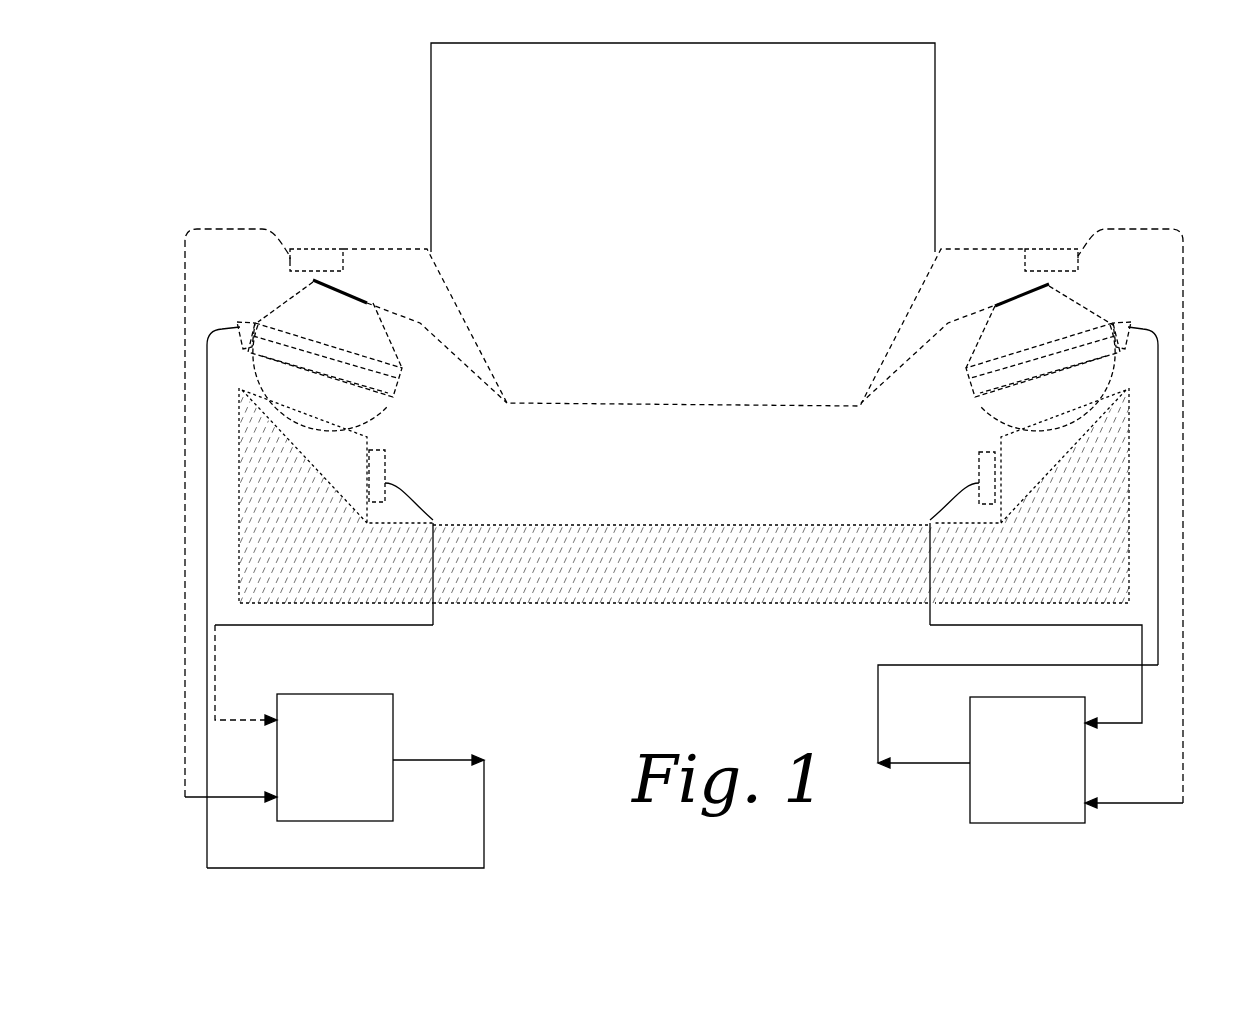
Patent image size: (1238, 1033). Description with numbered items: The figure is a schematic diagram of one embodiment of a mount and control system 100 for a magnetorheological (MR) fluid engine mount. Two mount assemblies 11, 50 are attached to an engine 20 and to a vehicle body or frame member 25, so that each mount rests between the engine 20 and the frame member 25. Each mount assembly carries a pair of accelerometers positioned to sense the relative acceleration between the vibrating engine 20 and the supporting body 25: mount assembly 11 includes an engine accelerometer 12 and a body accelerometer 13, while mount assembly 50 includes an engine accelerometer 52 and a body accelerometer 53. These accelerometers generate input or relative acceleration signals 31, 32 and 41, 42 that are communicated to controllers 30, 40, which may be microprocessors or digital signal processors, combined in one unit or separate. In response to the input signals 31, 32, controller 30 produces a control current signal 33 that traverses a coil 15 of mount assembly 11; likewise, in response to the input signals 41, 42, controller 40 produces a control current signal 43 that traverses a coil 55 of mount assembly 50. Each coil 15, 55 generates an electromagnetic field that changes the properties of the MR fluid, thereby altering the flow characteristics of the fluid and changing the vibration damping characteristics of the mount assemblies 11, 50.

The optical sensing system 100 is at (709, 478).
The engine 20 is at (942, 111).
The frame member 25 is at (814, 515).
The engine accelerometer 12 is at (1033, 240).
The mount assembly 11 is at (1085, 296).
The coil 15 is at (1120, 312).
The body accelerometer 13 is at (965, 463).
The engine accelerometer 52 is at (332, 246).
The coil 55 is at (248, 312).
The mount assembly 50 is at (275, 294).
The body accelerometer 53 is at (398, 461).
The controller 40 is at (346, 724).
The input signal 41 is at (242, 717).
The input signal 42 is at (242, 795).
The control current signal 43 is at (434, 757).
The controller 30 is at (1043, 727).
The input signal 31 is at (1112, 720).
The input signal 32 is at (1133, 800).
The control current signal 33 is at (938, 760).